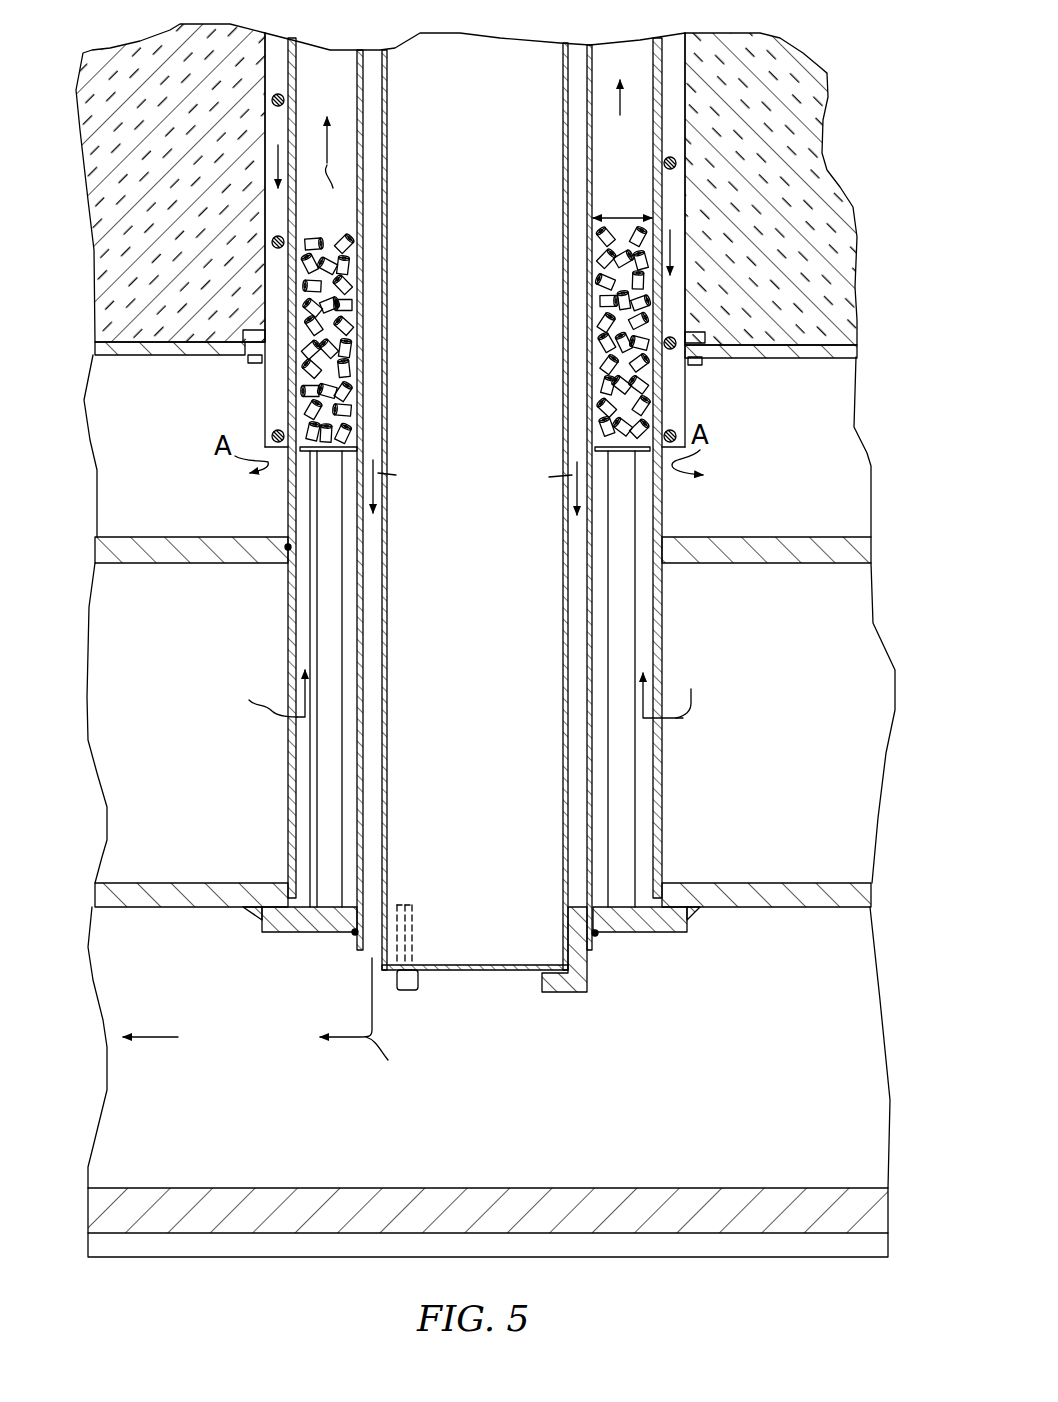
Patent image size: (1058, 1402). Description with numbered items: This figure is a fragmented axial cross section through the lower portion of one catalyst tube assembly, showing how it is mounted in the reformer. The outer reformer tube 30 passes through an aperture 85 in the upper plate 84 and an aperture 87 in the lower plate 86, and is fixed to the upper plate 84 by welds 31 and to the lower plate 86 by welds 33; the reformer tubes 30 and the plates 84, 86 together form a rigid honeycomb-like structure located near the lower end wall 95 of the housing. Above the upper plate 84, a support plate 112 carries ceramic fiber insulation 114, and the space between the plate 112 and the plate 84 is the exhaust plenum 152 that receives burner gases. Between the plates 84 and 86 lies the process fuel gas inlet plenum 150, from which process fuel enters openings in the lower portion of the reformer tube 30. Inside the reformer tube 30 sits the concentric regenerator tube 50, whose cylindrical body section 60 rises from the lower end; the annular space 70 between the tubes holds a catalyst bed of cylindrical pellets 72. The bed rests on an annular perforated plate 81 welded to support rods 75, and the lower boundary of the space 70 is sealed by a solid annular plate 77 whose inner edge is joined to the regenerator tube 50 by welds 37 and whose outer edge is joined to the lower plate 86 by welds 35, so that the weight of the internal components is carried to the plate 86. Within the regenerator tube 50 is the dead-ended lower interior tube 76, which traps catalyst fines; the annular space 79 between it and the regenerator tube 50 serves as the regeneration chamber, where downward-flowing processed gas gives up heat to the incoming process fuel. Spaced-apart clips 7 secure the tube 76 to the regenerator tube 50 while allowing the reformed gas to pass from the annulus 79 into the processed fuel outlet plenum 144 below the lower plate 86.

The clip 7 is at (416, 982).
The reformer tube 30 is at (661, 141).
The weld 31 is at (288, 547).
The weld 33 is at (298, 910).
The weld 35 is at (257, 912).
The weld 37 is at (355, 934).
The regenerator tube 50 is at (594, 85).
The cylindrical body section 60 is at (592, 172).
The annular space 70 is at (622, 218).
The catalyst pellets 72 is at (628, 306).
The support rods 75 is at (636, 524).
The lower interior tube 76 is at (563, 576).
The annular plate 77 is at (280, 940).
The annular space 79 is at (573, 757).
The annular perforated plate 81 is at (648, 457).
The upper plate 84 is at (863, 554).
The aperture 85 is at (645, 612).
The lower plate 86 is at (818, 895).
The aperture 87 is at (642, 882).
The lower end wall 95 is at (665, 1200).
The support plate 112 is at (775, 344).
The ceramic fiber insulation 114 is at (778, 53).
The processed fuel outlet plenum 144 is at (221, 1151).
The process fuel gas inlet plenum 150 is at (171, 773).
The exhaust plenum 152 is at (138, 496).